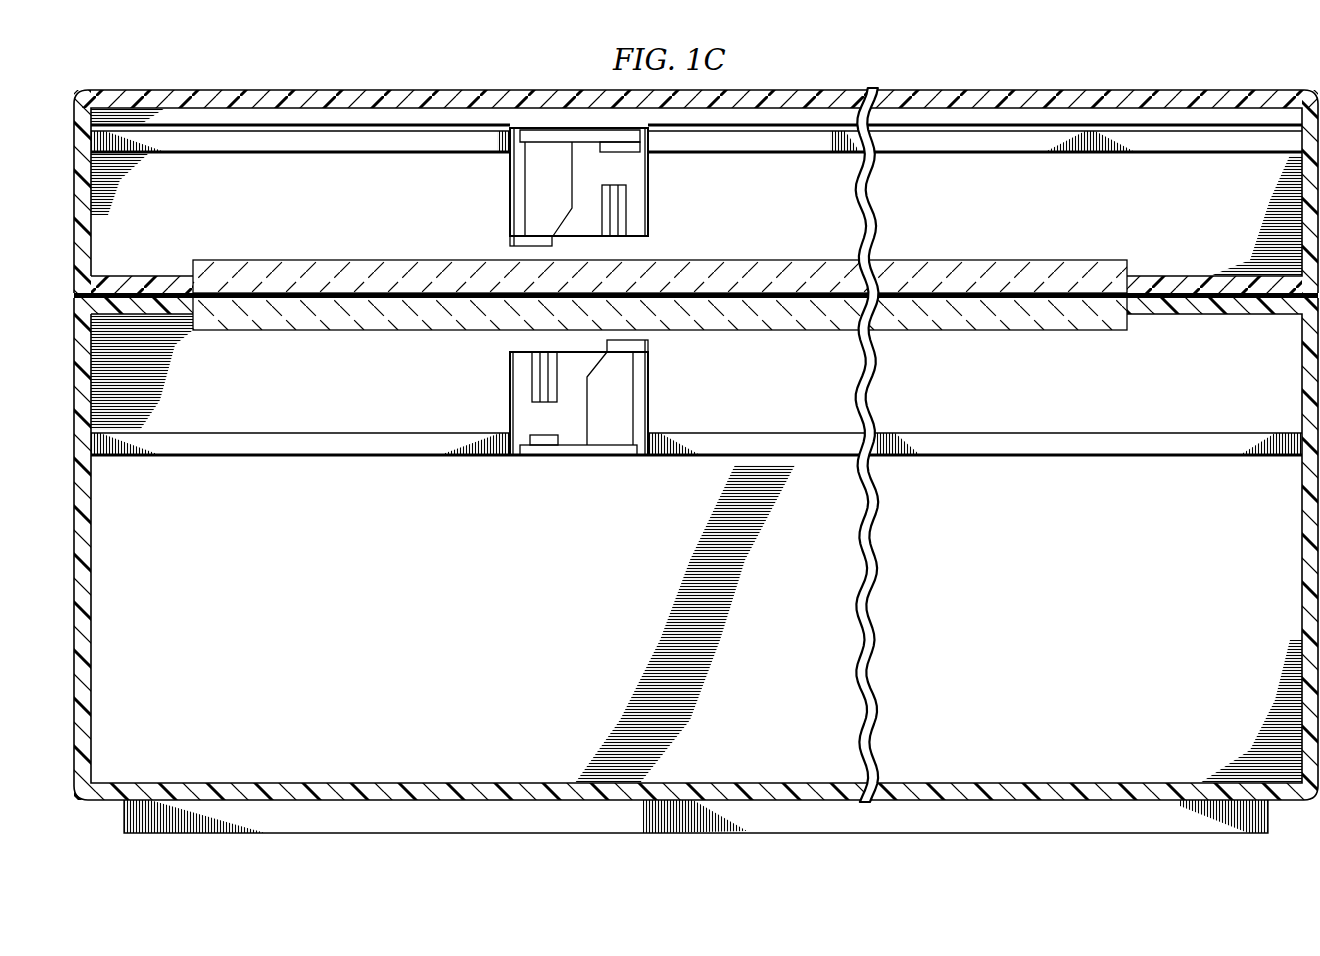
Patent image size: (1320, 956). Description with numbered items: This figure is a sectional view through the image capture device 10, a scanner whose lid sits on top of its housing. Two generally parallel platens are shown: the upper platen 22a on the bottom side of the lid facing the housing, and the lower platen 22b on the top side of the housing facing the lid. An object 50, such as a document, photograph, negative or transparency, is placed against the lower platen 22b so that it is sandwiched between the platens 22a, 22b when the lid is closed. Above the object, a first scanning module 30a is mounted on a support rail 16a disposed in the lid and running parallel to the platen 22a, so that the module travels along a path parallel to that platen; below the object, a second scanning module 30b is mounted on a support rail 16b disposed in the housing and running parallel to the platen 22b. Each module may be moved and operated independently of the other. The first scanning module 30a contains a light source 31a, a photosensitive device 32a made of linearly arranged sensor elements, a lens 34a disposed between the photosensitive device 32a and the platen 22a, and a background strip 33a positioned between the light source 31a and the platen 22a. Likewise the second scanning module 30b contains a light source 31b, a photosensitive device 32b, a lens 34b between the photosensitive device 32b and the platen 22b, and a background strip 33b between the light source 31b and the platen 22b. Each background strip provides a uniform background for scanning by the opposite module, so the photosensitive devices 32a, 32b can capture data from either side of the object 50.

The image capture device 10 is at (490, 67).
The support rail 16a is at (280, 153).
The support rail 16b is at (430, 460).
The platen 22a is at (342, 264).
The platen 22b is at (355, 329).
The object 50 is at (808, 291).
The first scanning module 30a is at (564, 187).
The second scanning module 30b is at (598, 397).
The light source 31a is at (533, 178).
The light source 31b is at (625, 408).
The photosensitive device 32a is at (632, 152).
The photosensitive device 32b is at (535, 440).
The background strip 33a is at (513, 240).
The background strip 33b is at (645, 346).
The lens 34a is at (626, 210).
The lens 34b is at (532, 375).